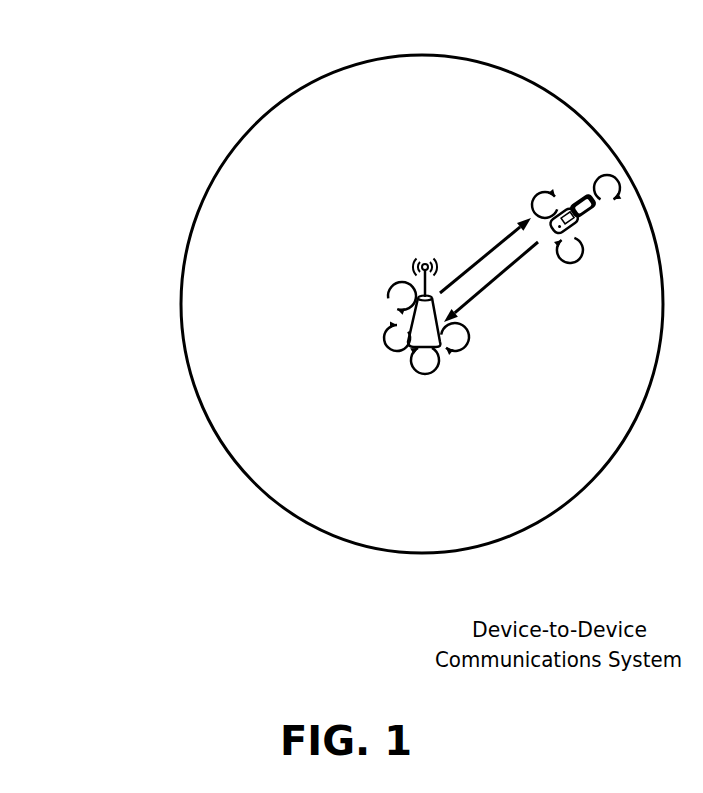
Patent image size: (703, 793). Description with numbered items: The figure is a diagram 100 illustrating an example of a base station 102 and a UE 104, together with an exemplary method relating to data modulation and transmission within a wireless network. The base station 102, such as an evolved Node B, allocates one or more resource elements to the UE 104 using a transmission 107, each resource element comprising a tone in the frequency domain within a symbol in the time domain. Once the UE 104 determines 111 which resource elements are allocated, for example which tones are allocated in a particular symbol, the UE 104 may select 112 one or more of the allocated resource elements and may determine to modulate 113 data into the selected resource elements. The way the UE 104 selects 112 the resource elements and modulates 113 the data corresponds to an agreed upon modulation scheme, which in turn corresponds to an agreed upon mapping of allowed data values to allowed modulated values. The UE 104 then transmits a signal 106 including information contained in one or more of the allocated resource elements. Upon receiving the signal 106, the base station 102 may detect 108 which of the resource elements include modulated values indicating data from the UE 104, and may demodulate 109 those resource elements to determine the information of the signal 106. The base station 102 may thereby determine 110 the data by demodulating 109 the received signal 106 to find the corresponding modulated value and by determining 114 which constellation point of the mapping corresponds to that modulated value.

The diagram 100 is at (90, 62).
The base station 102 is at (413, 256).
The UE 104 is at (580, 194).
The signal 106 is at (497, 278).
The transmission 107 is at (482, 258).
The detect 108 is at (385, 352).
The demodulate 109 is at (430, 377).
The determine 110 is at (392, 297).
The determines 111 is at (537, 194).
The select 112 is at (590, 256).
The modulate 113 is at (620, 193).
The determining 114 is at (462, 348).